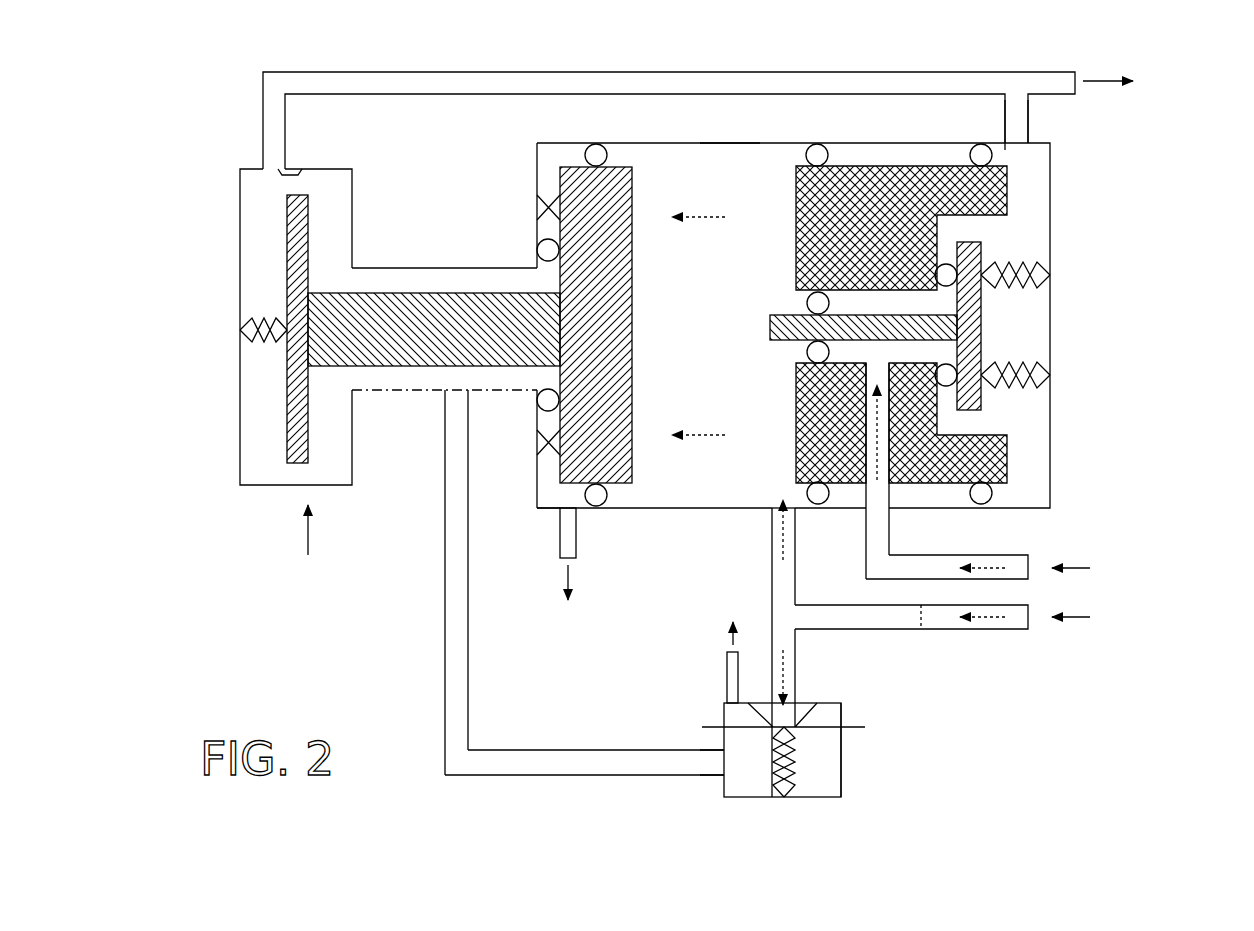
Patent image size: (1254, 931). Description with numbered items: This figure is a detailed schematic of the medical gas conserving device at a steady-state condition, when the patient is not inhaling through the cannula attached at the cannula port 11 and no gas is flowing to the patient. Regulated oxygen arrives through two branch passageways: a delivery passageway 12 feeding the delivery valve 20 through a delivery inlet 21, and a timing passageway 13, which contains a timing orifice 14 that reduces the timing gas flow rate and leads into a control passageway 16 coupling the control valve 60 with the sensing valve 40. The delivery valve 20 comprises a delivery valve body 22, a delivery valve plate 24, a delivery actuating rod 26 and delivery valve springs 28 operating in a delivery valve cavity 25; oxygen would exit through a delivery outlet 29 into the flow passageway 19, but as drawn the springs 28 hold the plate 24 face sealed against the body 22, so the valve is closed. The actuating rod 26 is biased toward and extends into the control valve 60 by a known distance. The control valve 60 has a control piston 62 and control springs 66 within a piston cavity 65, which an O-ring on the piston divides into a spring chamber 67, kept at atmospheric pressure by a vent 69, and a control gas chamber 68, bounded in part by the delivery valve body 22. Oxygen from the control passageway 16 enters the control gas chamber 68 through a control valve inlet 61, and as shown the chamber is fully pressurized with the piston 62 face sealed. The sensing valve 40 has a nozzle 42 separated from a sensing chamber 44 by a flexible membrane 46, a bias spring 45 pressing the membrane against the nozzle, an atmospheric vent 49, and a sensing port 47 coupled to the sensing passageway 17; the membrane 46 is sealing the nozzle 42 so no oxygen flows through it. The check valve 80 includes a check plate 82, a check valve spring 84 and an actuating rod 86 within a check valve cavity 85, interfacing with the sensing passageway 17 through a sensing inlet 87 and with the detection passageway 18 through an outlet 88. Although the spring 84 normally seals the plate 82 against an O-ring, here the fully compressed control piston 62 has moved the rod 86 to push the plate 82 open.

The cannula port 11 is at (1075, 72).
The delivery passageway 12 is at (1000, 555).
The timing passageway 13 is at (990, 630).
The timing orifice 14 is at (921, 625).
The control passageway 16 is at (772, 556).
The sensing passageway 17 is at (447, 728).
The detection passageway 18 is at (262, 108).
The flow passageway 19 is at (1028, 110).
The delivery valve 20 is at (1066, 250).
The delivery inlet 21 is at (877, 490).
The delivery valve body 22 is at (898, 166).
The delivery valve plate 24 is at (985, 410).
The delivery valve cavity 25 is at (1035, 458).
The delivery actuating rod 26 is at (772, 340).
The delivery valve springs 28 is at (1050, 352).
The delivery outlet 29 is at (1022, 145).
The sensing valve 40 is at (832, 810).
The nozzle 42 is at (748, 714).
The sensing chamber 44 is at (752, 762).
The bias spring 45 is at (785, 797).
The flexible membrane 46 is at (830, 730).
The sensing port 47 is at (724, 762).
The atmospheric vent 49 is at (727, 665).
The control valve 60 is at (520, 150).
The control valve inlet 61 is at (783, 495).
The control piston 62 is at (625, 212).
The piston cavity 65 is at (708, 143).
The control springs 66 is at (540, 200).
The spring chamber 67 is at (548, 477).
The control gas chamber 68 is at (704, 326).
The vent 69 is at (577, 545).
The check valve 80 is at (310, 551).
The check plate 82 is at (287, 247).
The check valve spring 84 is at (246, 345).
The check valve cavity 85 is at (255, 203).
The actuating rod 86 is at (445, 292).
The sensing inlet 87 is at (445, 390).
The outlet 88 is at (290, 168).